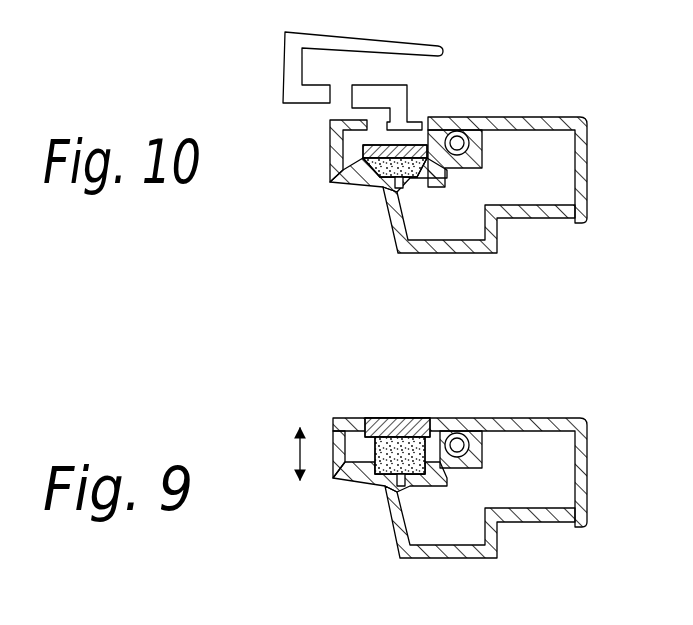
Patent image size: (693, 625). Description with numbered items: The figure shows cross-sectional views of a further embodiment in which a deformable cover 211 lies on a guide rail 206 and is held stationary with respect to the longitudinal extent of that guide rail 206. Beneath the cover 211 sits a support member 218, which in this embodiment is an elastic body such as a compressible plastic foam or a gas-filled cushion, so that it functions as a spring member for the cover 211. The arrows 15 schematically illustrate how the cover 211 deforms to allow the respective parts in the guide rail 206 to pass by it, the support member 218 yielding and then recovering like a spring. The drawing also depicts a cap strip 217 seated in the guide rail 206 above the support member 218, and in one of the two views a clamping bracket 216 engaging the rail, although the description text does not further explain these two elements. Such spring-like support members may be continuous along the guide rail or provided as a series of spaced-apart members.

In FIG. 10, the clamping bracket 216 is at (400, 111).
In FIG. 10, the cover strip 217 is at (372, 160).
In FIG. 9, the cover strip 217 is at (383, 416).
In FIG. 10, the support member 218 is at (387, 190).
In FIG. 9, the support member 218 is at (375, 477).
In FIG. 10, the cover 211 is at (458, 185).
In FIG. 9, the cover 211 is at (428, 412).
In FIG. 9, the guide rail 206 is at (580, 421).
In FIG. 9, the arrows 15 is at (298, 453).